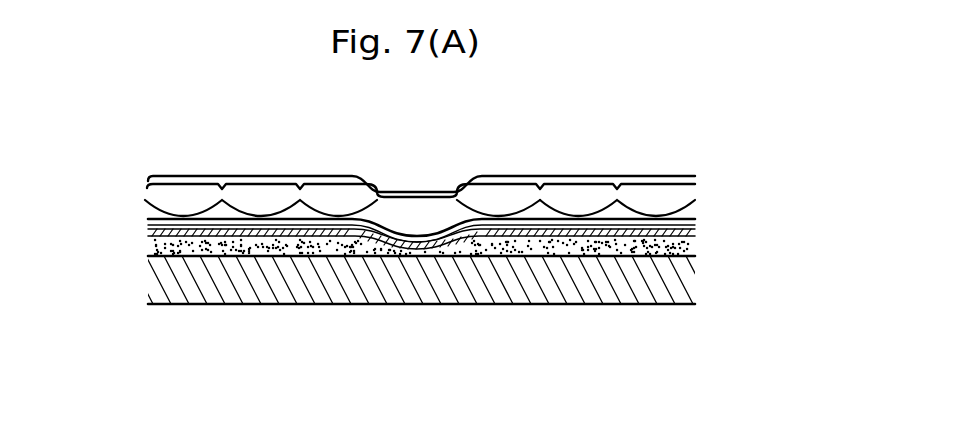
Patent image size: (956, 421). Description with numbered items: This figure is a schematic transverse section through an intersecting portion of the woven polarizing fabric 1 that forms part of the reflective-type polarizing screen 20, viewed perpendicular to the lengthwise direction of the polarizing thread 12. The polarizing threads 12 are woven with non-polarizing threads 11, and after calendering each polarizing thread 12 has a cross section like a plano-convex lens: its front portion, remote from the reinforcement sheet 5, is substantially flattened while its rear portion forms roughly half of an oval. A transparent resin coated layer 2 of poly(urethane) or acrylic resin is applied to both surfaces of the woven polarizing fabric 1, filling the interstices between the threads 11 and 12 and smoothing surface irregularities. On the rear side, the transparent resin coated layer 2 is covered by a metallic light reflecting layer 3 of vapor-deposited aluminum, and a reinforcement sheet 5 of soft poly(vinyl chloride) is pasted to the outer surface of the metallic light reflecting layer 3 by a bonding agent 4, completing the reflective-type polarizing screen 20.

The woven polarizing fabric 1 is at (777, 150).
The transparent resin coated layer 2 is at (152, 222).
The metallic light reflecting layer 3 is at (283, 237).
The bonding agent 4 is at (479, 248).
The reinforcement sheet 5 is at (555, 300).
The non-polarizing thread 11 is at (695, 225).
The polarizing thread 12 is at (658, 197).
The reflective-type polarizing screen 20 is at (606, 170).